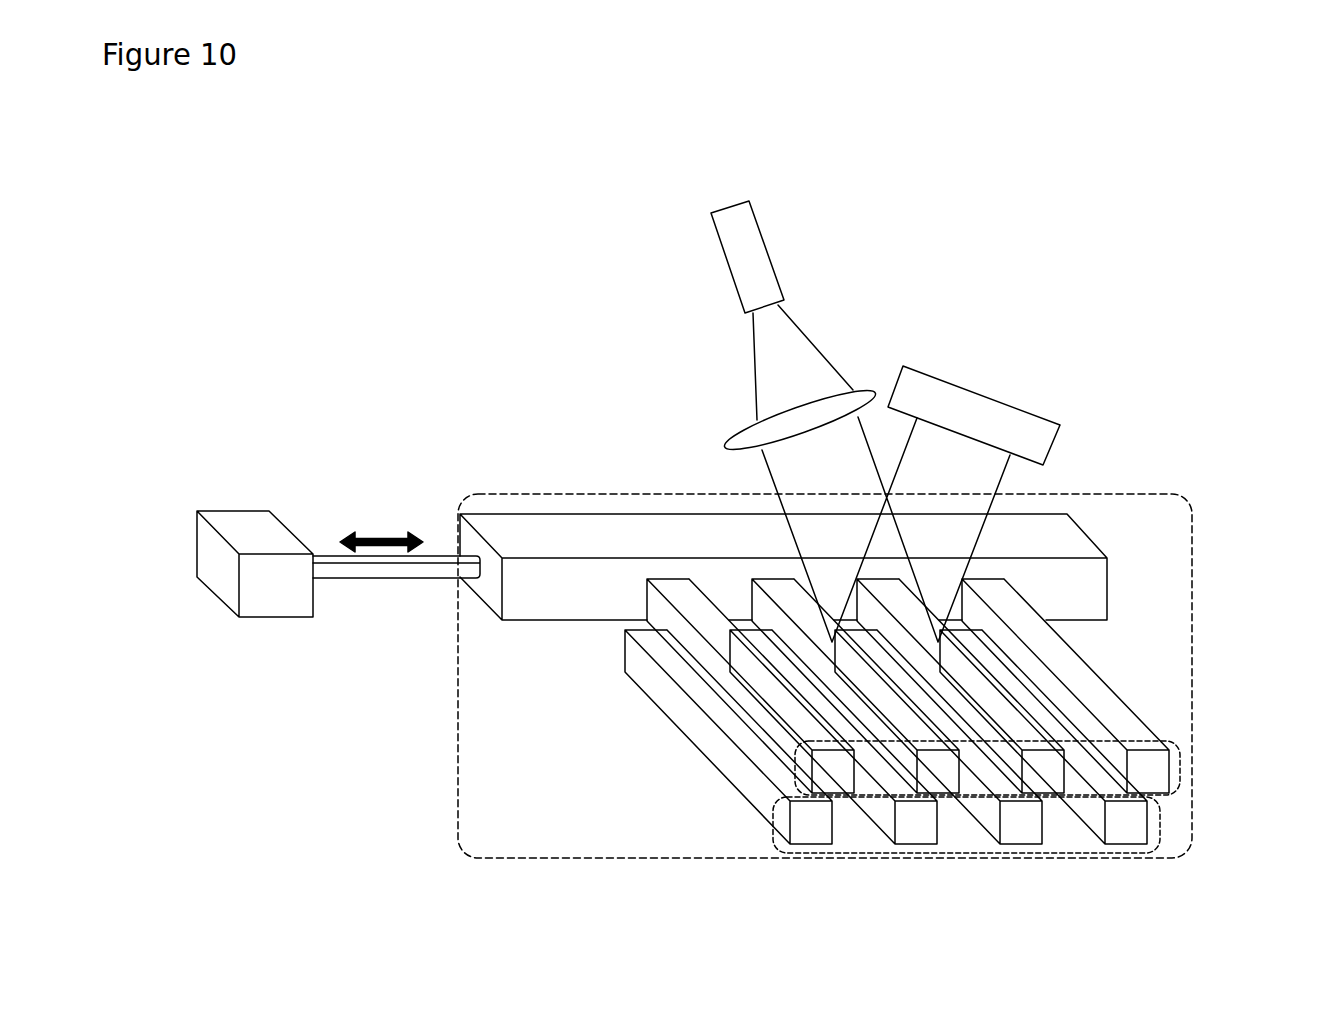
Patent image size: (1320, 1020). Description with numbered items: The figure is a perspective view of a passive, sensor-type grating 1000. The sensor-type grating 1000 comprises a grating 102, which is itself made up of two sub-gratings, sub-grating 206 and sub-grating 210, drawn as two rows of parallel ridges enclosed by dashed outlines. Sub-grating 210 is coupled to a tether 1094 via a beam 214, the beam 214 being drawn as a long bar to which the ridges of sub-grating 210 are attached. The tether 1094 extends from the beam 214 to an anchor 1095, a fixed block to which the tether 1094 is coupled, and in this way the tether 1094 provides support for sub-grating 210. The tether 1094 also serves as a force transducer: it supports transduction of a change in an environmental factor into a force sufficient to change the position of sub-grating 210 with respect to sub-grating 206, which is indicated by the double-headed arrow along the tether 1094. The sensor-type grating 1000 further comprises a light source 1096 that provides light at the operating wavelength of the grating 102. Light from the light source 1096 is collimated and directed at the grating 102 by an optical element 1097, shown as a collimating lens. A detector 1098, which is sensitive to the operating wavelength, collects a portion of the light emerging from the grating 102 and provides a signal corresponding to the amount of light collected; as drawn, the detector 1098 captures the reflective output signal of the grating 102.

The sensor-type grating 1000 is at (443, 262).
The grating 102 is at (702, 858).
The anchor 1095 is at (297, 591).
The tether 1094 is at (418, 568).
The beam 214 is at (565, 601).
The sub-grating 210 is at (1183, 768).
The sub-grating 206 is at (1160, 843).
The light source 1096 is at (753, 280).
The optical element 1097 is at (797, 417).
The detector 1098 is at (967, 408).